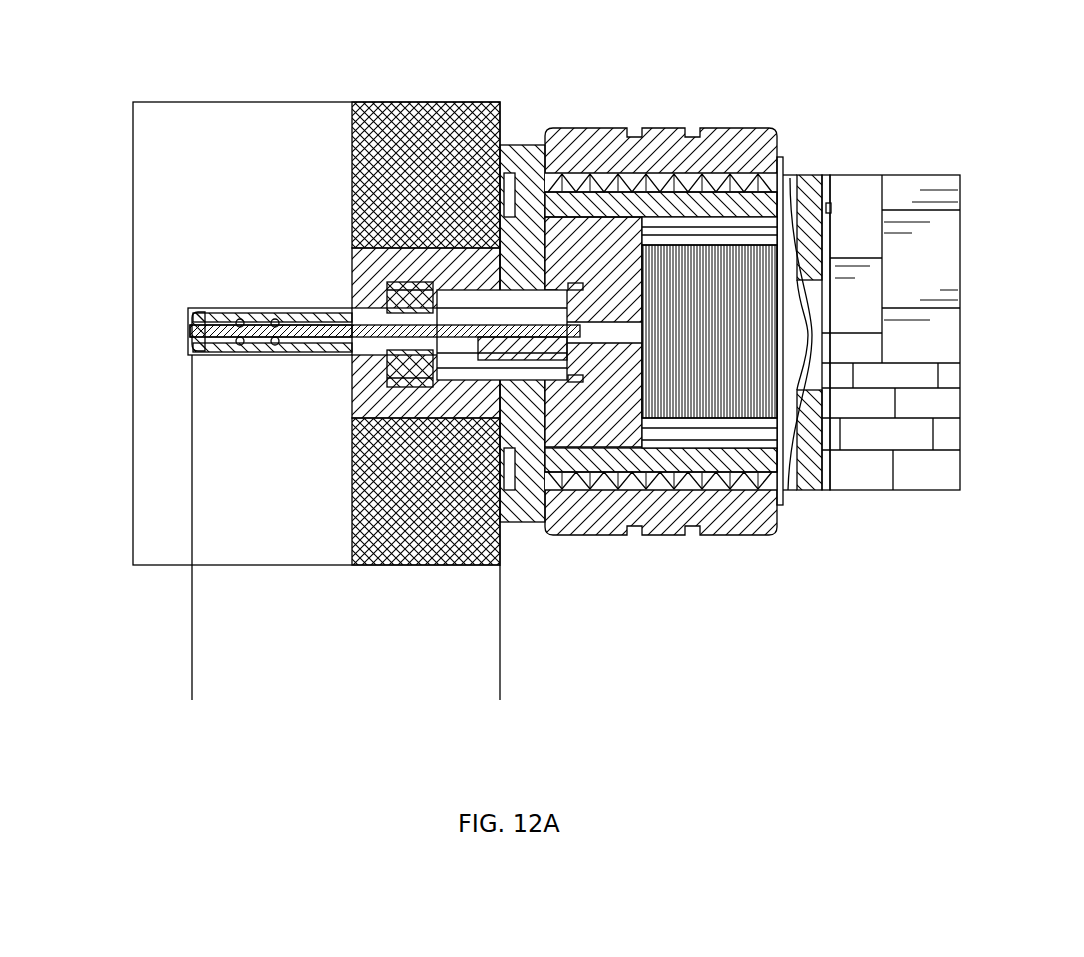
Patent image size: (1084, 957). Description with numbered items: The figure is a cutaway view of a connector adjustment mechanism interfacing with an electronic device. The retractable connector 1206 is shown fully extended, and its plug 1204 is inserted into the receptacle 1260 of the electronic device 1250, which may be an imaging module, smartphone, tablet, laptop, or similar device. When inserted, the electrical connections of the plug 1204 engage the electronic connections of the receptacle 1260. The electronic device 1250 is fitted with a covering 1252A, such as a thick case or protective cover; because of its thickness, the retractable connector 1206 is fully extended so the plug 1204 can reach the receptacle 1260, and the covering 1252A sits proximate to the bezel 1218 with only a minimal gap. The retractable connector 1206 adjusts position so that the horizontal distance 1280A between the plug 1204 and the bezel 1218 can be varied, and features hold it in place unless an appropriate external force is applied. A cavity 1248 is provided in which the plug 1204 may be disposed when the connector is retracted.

The plug 1204 is at (292, 292).
The retractable connector 1206 is at (456, 231).
The bezel 1218 is at (488, 520).
The cavity 1248 is at (741, 211).
The electronic device 1250 is at (118, 276).
The covering 1252A is at (516, 116).
The receptacle 1260 is at (172, 335).
The distance 1280A is at (498, 662).